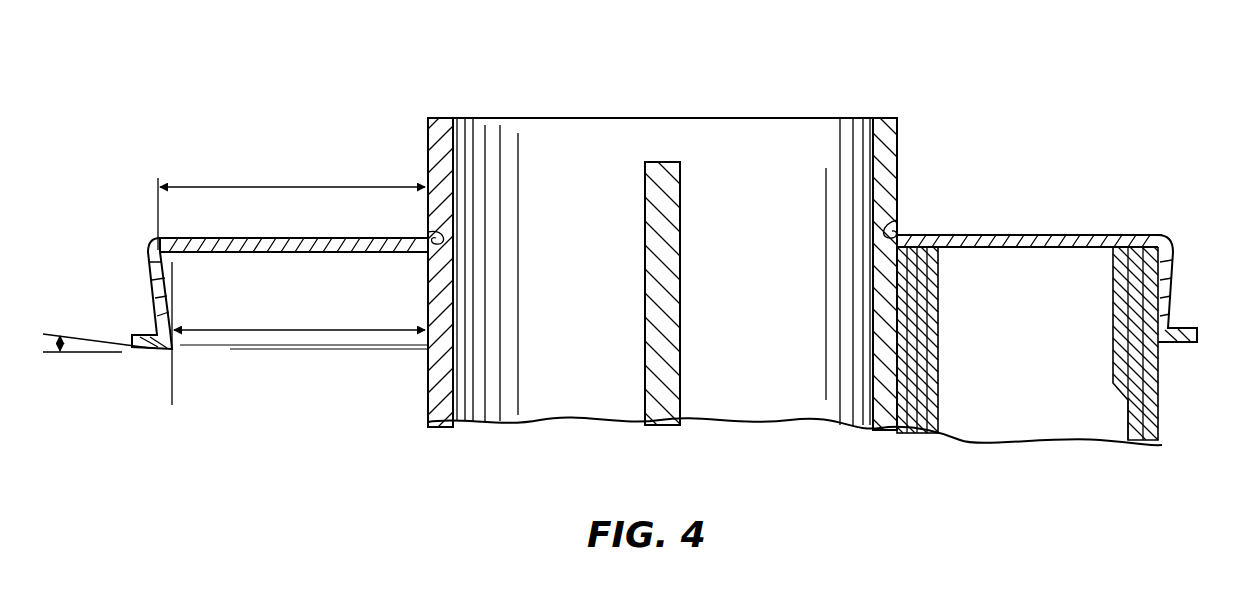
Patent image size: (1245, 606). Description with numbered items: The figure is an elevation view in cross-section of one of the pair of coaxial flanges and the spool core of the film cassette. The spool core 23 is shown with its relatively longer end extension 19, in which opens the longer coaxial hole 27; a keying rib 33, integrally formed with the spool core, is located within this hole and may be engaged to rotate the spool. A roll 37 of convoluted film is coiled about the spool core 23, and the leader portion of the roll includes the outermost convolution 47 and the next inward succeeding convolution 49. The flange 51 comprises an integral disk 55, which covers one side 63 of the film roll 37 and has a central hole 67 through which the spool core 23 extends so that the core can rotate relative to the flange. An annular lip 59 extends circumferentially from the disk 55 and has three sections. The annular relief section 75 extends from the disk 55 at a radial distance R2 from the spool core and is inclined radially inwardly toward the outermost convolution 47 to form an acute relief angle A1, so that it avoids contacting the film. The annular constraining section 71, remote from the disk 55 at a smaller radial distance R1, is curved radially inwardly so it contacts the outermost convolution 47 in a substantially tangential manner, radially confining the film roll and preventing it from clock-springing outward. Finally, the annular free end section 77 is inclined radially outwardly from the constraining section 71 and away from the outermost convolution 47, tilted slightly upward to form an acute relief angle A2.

The longer opposite end extension 19 is at (443, 118).
The spool core 23 is at (500, 400).
The longer coaxial hole 27 is at (722, 125).
The keying rib 33 is at (682, 213).
The film roll 37 is at (1015, 395).
The outermost convolution 47 is at (172, 405).
The next inward succeeding convolution 49 is at (1158, 425).
The flange 51 is at (150, 246).
The disk 55 is at (340, 238).
The annular lip 59 is at (146, 262).
The side of film roll 63 is at (1124, 238).
The central hole 67 is at (434, 236).
The annular constraining section 71 is at (150, 325).
The annular relief section 75 is at (152, 283).
The annular free end section 77 is at (135, 349).
The radial distance R1 is at (318, 330).
The radial distance R2 is at (300, 187).
The relief angle A1 is at (176, 267).
The relief angle A2 is at (62, 355).